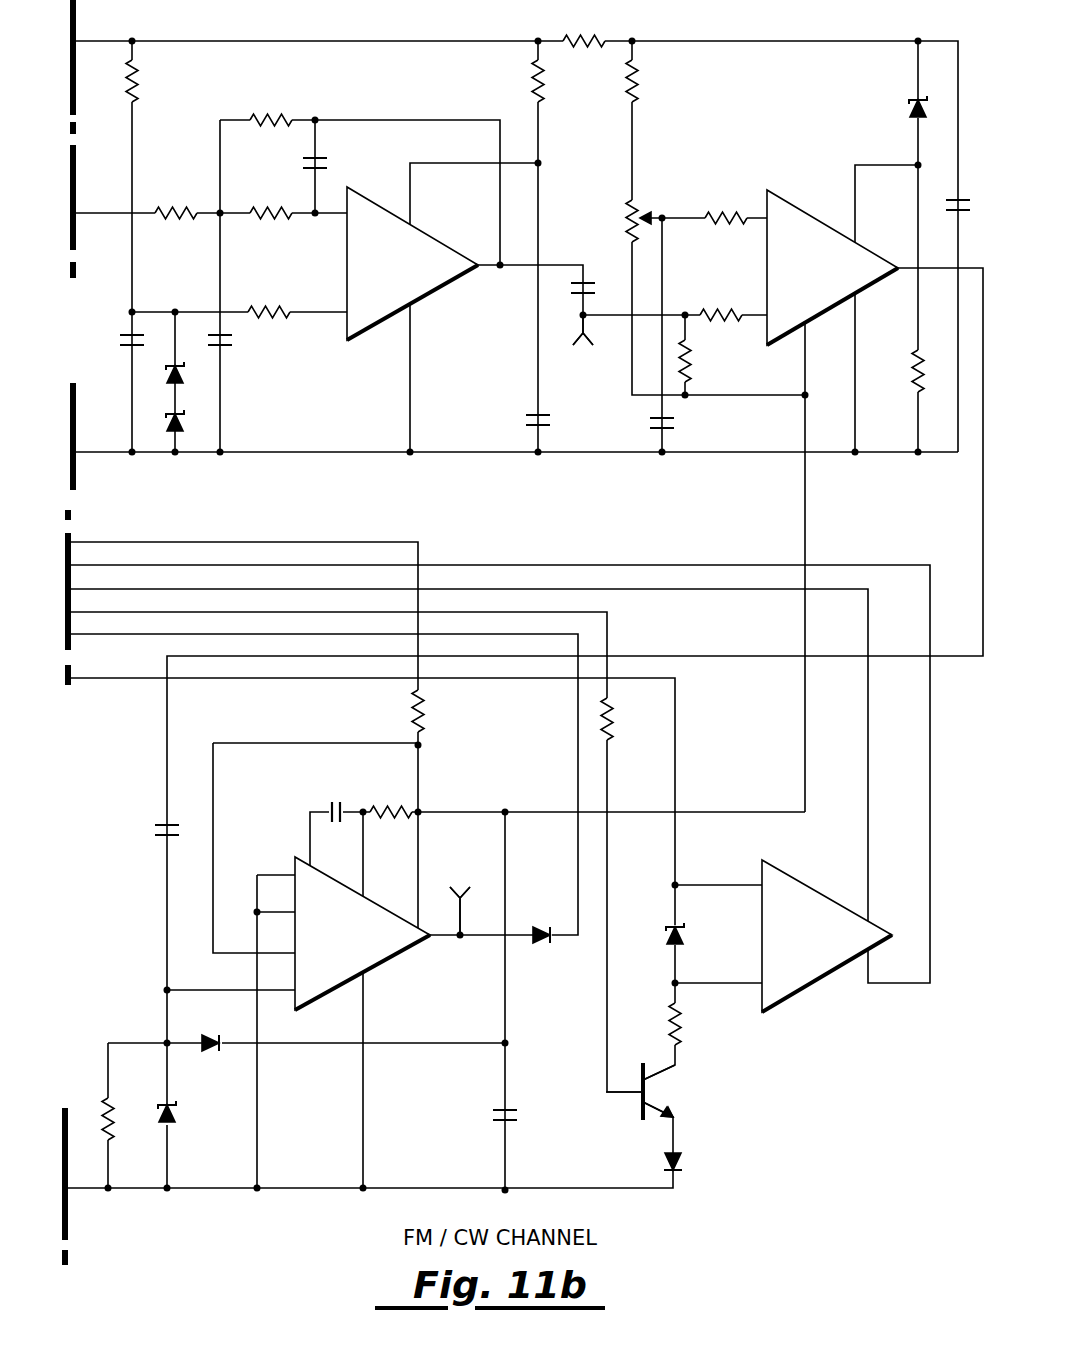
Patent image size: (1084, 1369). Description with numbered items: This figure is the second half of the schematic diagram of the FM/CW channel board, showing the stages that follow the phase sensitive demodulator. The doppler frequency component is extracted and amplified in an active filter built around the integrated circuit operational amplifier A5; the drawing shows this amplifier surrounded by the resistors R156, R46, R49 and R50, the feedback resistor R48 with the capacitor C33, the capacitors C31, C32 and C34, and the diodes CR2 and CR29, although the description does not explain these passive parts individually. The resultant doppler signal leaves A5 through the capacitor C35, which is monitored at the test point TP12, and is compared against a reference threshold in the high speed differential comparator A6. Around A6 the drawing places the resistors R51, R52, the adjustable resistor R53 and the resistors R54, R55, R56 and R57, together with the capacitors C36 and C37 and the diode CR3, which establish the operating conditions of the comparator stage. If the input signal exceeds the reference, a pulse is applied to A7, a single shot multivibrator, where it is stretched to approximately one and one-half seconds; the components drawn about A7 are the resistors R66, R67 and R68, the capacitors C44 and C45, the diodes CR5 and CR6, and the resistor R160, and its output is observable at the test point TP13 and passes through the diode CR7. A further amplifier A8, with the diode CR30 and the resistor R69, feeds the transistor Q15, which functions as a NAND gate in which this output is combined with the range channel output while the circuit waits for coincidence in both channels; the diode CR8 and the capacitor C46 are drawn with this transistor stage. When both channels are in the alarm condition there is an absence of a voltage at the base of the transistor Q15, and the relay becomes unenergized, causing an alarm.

The resistor R156 is at (154, 81).
The resistor R48 is at (394, 93).
The capacitor C33 is at (332, 162).
The resistor R46 is at (176, 198).
The resistor R49 is at (271, 198).
The resistor R50 is at (269, 294).
The capacitor C31 is at (116, 359).
The zener diode pair CR2 is at (187, 396).
The capacitor C32 is at (235, 359).
The diode CR29 is at (176, 471).
The resistor R51 is at (584, 23).
The resistor R52 is at (651, 81).
The potentiometer R53 is at (615, 221).
The resistor R54 is at (724, 200).
The capacitor C35 is at (569, 308).
The test point TP12 is at (580, 340).
The capacitor C34 is at (516, 428).
The capacitor C36 is at (679, 428).
The resistor R55 is at (721, 298).
The resistor R56 is at (703, 361).
The resistor R57 is at (898, 374).
The zener diode CR3 is at (902, 98).
The capacitor C37 is at (968, 190).
The active filter A5 is at (421, 263).
The high speed differential comparator A6 is at (836, 267).
The resistor R67 is at (436, 711).
The resistor R68 is at (626, 719).
The capacitor C44 is at (148, 817).
The capacitor C45 is at (320, 796).
The resistor R66 is at (391, 794).
The single shot multivibrator A7 is at (370, 926).
The test point TP13 is at (460, 902).
The diode CR7 is at (541, 922).
The zener diode CR30 is at (653, 924).
The operational amplifier A8 is at (827, 936).
The resistor R69 is at (693, 1025).
The NAND gate transistor Q15 is at (667, 1091).
The diode CR8 is at (692, 1161).
The capacitor C46 is at (523, 1126).
The diode CR6 is at (207, 1032).
The zener diode CR5 is at (184, 1112).
The resistor R160 is at (126, 1138).